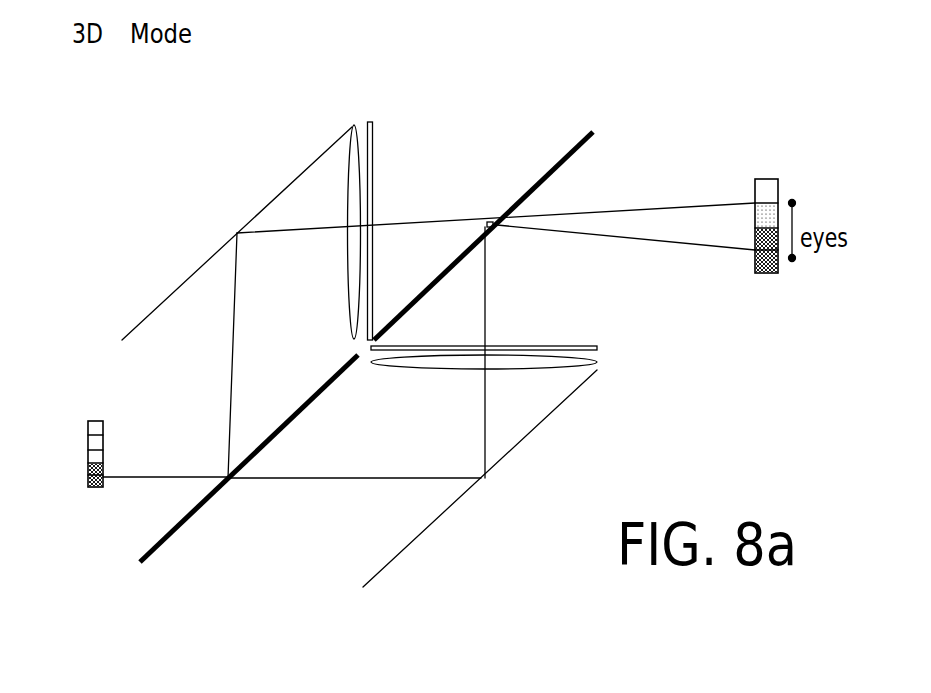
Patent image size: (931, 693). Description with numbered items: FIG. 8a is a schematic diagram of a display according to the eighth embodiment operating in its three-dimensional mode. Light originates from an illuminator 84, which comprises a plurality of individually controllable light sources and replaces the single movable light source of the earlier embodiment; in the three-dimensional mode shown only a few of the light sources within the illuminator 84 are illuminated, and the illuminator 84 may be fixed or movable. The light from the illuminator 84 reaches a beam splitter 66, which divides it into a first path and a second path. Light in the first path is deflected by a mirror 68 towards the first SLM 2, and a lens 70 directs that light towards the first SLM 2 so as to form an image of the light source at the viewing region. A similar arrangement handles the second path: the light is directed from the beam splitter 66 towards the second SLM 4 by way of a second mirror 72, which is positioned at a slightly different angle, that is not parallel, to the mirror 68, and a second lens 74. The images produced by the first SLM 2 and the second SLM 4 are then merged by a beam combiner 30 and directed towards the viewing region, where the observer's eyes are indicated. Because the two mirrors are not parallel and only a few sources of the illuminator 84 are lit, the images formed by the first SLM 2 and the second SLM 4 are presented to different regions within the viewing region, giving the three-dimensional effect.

The first SLM 2 is at (582, 347).
The second SLM 4 is at (373, 132).
The beam combiner 30 is at (537, 182).
The beam splitter 66 is at (190, 515).
The mirror 68 is at (442, 517).
The lens 70 is at (567, 370).
The second mirror 72 is at (200, 257).
The second lens 74 is at (348, 155).
The illuminator 84 is at (83, 457).